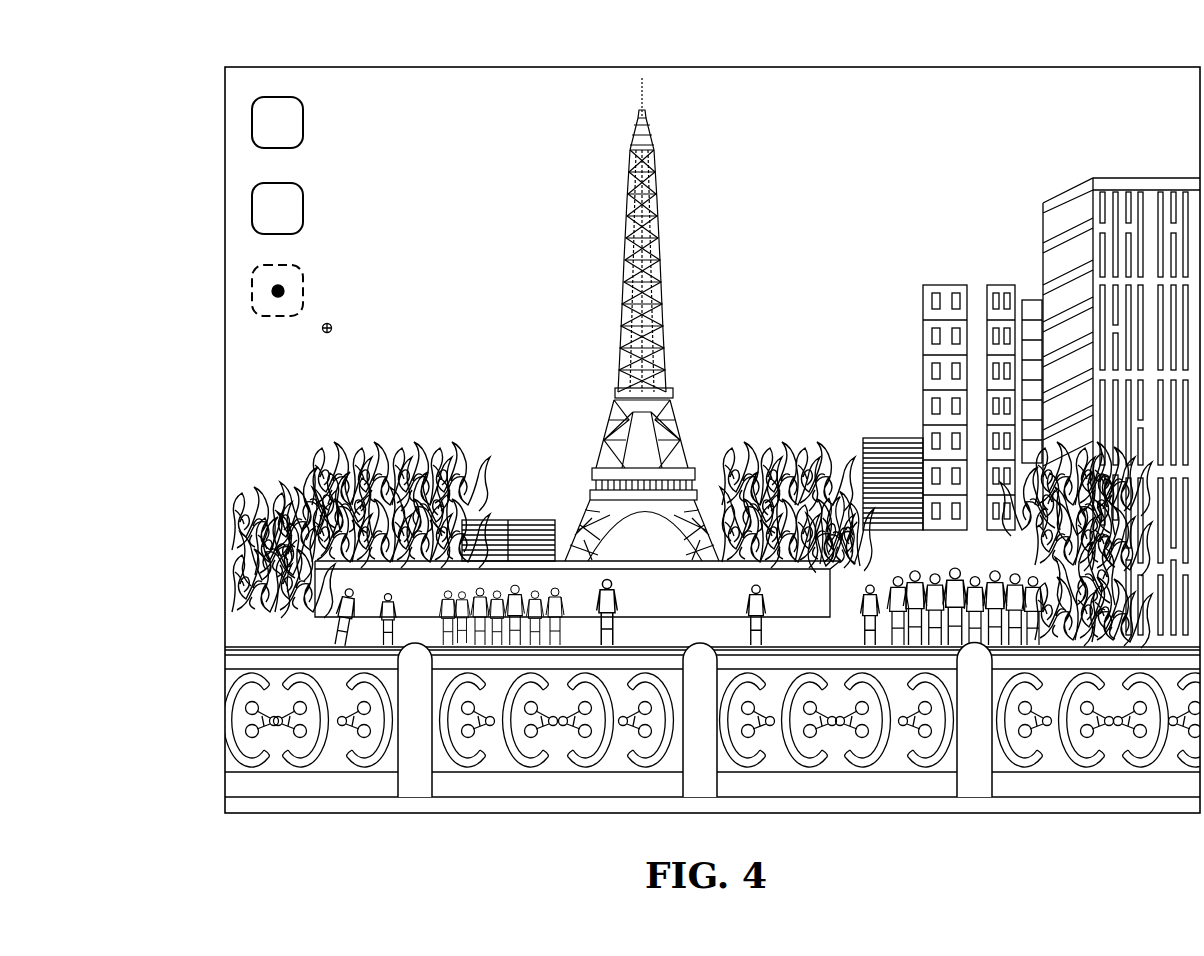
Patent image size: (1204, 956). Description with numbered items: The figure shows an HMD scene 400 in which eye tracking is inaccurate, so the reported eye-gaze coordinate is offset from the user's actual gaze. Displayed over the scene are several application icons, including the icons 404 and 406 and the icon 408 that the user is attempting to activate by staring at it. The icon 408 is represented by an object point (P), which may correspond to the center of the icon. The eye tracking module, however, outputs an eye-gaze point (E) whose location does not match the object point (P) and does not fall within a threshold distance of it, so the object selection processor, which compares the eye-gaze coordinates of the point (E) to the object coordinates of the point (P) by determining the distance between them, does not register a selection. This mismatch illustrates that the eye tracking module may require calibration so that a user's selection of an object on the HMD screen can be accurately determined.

The augmented reality view of a real-world environment 400 is at (118, 62).
The map indicator icon (M) 404 is at (303, 118).
The camera indicator icon (C) 406 is at (303, 204).
The icon 408 is at (303, 287).